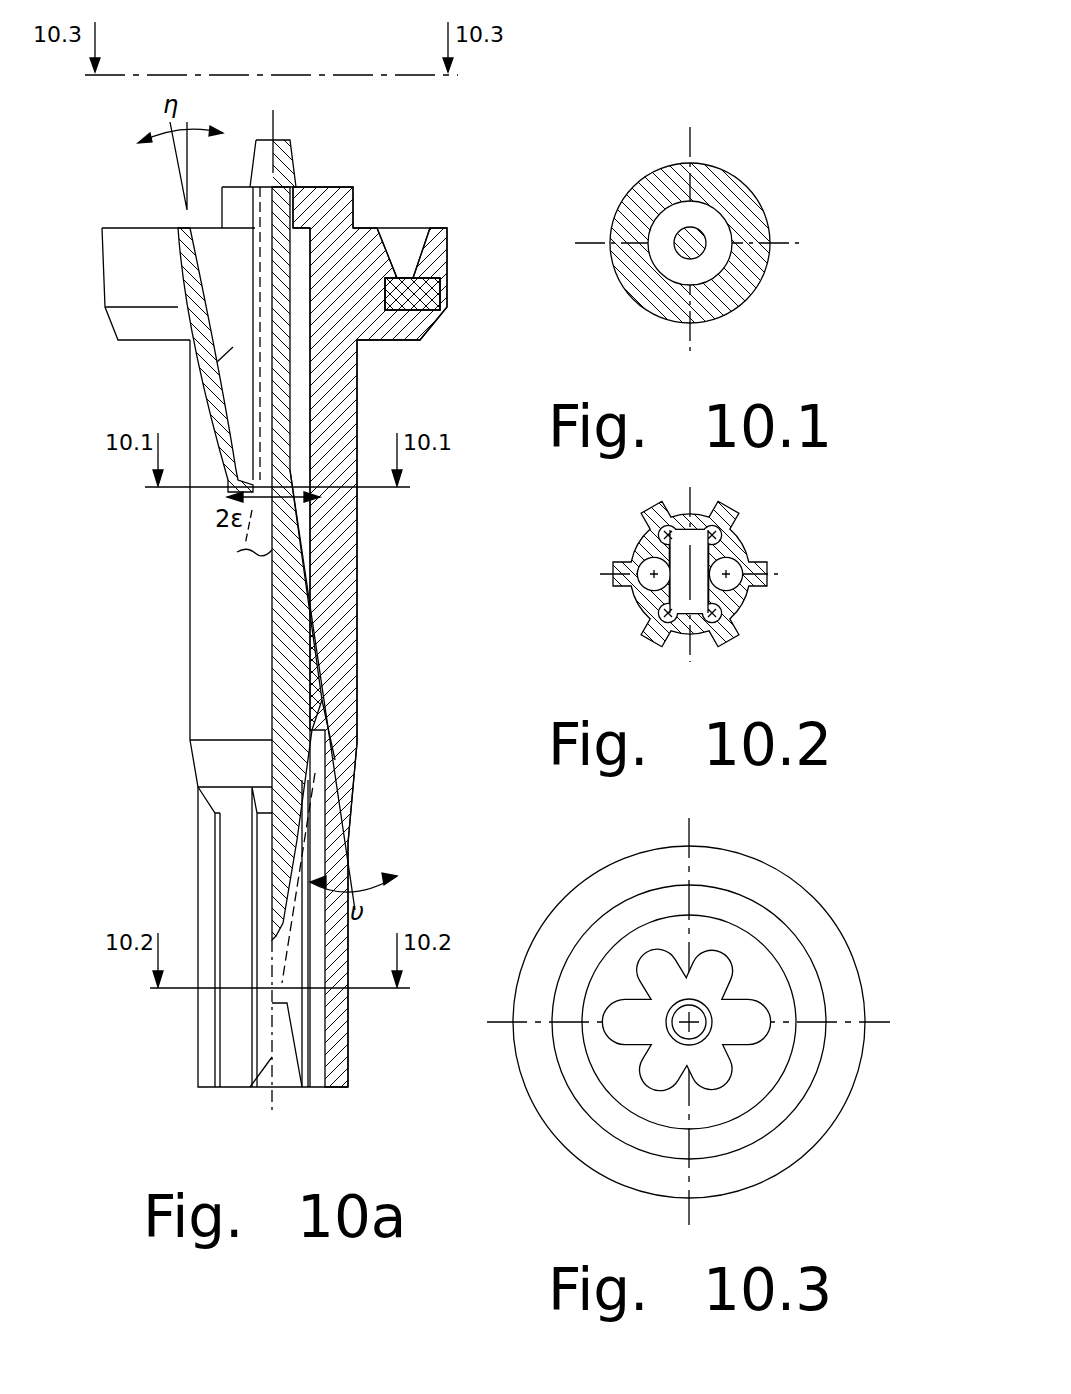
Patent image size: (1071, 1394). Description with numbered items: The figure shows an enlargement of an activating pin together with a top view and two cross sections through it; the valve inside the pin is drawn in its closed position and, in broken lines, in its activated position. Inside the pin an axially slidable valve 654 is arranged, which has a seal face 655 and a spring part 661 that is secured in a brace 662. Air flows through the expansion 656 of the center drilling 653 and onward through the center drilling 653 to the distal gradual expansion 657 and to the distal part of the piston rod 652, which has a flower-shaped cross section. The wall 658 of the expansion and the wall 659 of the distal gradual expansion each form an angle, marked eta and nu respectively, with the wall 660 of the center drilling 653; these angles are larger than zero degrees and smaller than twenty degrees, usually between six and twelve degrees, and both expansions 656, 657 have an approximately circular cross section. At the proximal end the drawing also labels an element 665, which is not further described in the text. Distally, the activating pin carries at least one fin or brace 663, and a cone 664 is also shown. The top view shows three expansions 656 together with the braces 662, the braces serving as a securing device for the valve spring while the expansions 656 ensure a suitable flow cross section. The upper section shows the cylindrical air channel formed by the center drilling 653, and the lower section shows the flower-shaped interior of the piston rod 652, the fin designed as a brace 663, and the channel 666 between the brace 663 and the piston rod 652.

In FIG. 10A, the piston rod 652 is at (220, 577).
In FIG. 10.1, the piston rod 652 is at (750, 292).
In FIG. 10.1, the center drilling 653 is at (713, 223).
In FIG. 10A, the axially slidable valve 654 is at (287, 700).
In FIG. 10.1, the axially slidable valve 654 is at (653, 290).
In FIG. 10A, the seal face 655 is at (307, 593).
In FIG. 10A, the expansion 656 is at (233, 350).
In FIG. 10.3, the expansion 656 is at (723, 1080).
In FIG. 10A, the distal gradual expansion 657 is at (337, 687).
In FIG. 10A, the wall 658 is at (180, 255).
In FIG. 10A, the wall 659 is at (323, 660).
In FIG. 10A, the wall 660 is at (313, 383).
In FIG. 10A, the spring part 661 is at (282, 240).
In FIG. 10A, the brace 662 is at (330, 197).
In FIG. 10.3, the brace 662 is at (652, 1082).
In FIG. 10A, the fin or brace 663 is at (278, 1033).
In FIG. 10.2, the fin or brace 663 is at (700, 595).
In FIG. 10A, the cone 664 is at (283, 847).
In FIG. 10A, the pin 665 is at (276, 123).
In FIG. 10.2, the channel 666 is at (718, 558).